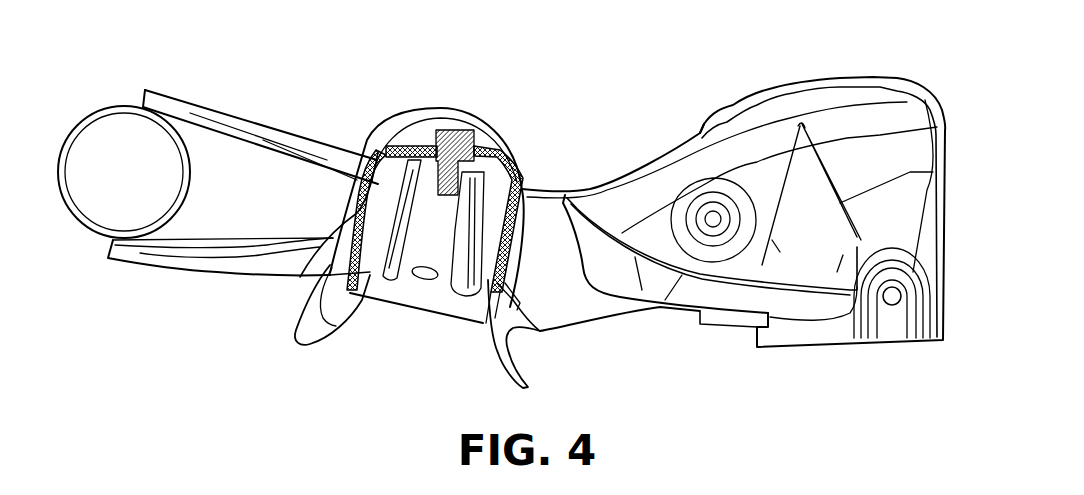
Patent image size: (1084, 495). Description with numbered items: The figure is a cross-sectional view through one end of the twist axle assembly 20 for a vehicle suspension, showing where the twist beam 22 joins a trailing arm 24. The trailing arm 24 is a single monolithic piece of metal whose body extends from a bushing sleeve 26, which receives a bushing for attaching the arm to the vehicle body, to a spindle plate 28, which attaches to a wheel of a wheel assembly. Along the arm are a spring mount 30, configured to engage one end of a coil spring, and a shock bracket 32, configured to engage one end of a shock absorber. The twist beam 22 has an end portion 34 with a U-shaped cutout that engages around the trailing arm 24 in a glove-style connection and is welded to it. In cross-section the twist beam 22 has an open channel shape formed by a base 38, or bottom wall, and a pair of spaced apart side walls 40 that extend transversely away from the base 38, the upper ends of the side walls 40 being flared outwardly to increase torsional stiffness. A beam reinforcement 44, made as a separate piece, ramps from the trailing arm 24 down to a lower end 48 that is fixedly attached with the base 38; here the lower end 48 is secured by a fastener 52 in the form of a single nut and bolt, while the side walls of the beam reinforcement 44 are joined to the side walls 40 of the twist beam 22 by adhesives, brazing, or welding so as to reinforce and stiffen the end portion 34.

The twist axle assembly 20 is at (112, 334).
The twist beam 22 is at (499, 126).
The trailing arm 24 is at (177, 266).
The bushing sleeve 26 is at (73, 130).
The spindle plate 28 is at (893, 342).
The spring mount 30 is at (771, 300).
The shock bracket 32 is at (912, 280).
The end portion 34 is at (430, 125).
The base 38 is at (415, 143).
The side walls 40 is at (316, 266).
The beam reinforcement 44 is at (497, 170).
The lower end 48 is at (377, 190).
The fastener 52 is at (456, 130).